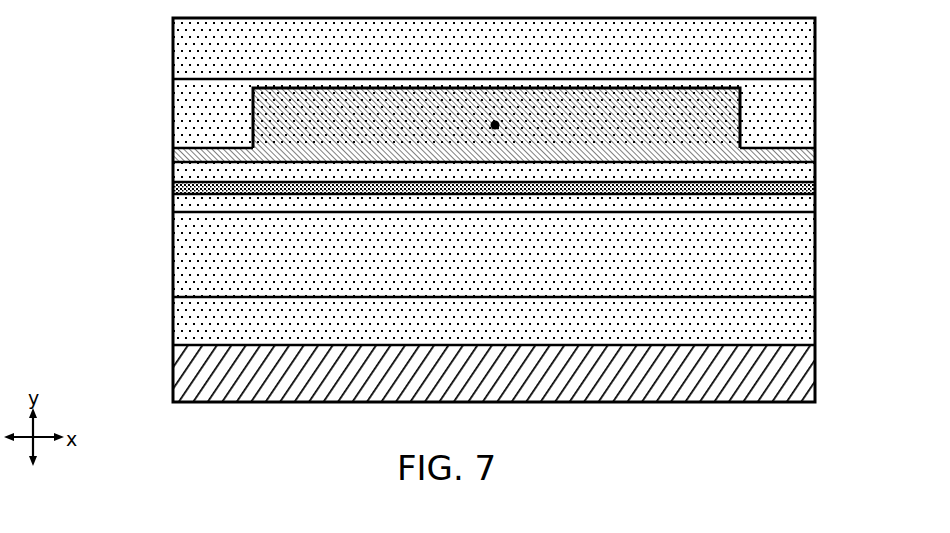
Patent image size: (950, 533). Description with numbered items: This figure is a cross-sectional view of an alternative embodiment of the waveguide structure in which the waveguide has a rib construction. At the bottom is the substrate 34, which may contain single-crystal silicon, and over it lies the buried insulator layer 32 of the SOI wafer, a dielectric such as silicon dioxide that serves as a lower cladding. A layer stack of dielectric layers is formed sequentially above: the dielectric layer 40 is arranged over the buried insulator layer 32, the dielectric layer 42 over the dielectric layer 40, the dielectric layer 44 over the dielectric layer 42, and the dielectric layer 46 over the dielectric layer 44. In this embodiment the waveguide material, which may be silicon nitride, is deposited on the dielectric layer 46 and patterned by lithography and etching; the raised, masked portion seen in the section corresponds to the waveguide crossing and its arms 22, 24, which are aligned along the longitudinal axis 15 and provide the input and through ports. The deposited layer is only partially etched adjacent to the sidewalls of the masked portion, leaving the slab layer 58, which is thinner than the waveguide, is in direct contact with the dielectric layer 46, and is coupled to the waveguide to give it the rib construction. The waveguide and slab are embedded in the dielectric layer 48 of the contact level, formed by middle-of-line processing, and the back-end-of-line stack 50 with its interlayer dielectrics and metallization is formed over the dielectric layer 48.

The arm 22 is at (188, 110).
The back-end-of-line stack 50 is at (772, 52).
The arm 24 is at (670, 120).
The longitudinal axis 15 is at (495, 125).
The dielectric layer 48 is at (190, 140).
The slab layer 58 is at (210, 155).
The dielectric layer 46 is at (778, 175).
The dielectric layer 44 is at (190, 187).
The dielectric layer 42 is at (780, 200).
The dielectric layer 40 is at (190, 277).
The buried insulator layer 32 is at (190, 319).
The substrate 34 is at (188, 380).